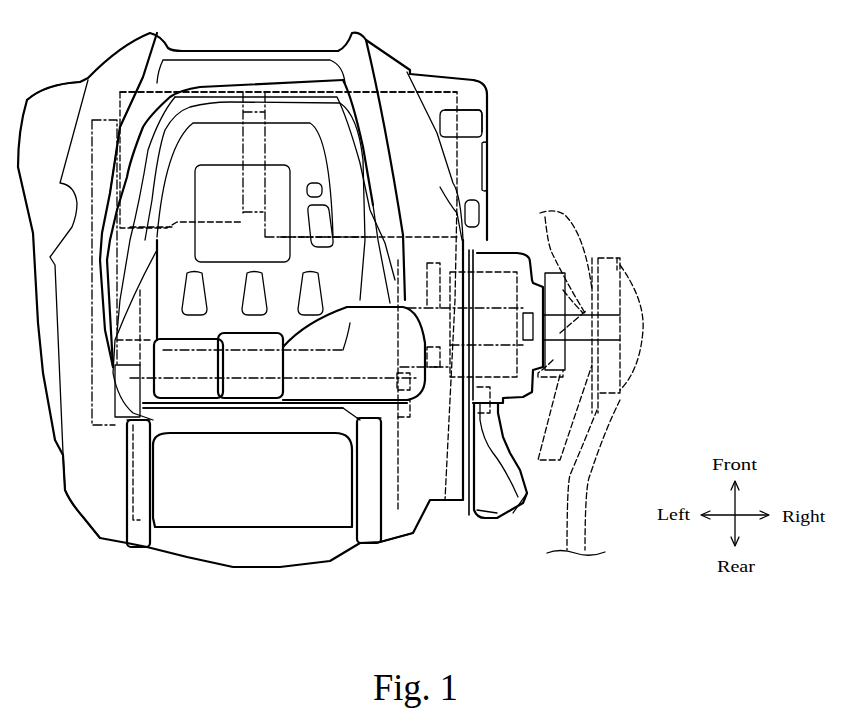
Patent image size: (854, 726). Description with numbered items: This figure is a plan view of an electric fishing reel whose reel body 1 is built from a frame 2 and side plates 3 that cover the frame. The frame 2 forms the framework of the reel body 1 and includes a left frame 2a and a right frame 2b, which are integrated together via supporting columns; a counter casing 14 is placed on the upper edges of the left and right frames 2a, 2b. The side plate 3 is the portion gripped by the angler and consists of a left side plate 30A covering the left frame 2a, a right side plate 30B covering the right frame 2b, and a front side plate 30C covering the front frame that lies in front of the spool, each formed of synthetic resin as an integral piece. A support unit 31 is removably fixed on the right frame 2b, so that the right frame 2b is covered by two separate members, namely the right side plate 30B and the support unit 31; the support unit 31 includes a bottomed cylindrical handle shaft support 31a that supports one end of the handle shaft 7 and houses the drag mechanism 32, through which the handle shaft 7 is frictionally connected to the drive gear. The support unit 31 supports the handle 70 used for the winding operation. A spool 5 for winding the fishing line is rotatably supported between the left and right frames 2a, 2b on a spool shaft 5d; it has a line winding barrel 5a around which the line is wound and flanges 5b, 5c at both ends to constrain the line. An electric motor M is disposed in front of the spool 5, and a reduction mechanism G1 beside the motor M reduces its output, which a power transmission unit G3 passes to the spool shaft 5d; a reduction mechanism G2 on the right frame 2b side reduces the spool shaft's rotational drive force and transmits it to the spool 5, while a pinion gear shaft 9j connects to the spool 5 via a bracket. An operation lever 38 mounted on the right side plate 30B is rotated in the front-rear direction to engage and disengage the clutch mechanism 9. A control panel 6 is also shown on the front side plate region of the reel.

The reel body 1 is at (655, 107).
The frame 2 is at (254, 499).
The left frame 2a is at (137, 543).
The right frame 2b is at (373, 543).
The side plate 3 is at (252, 300).
The left side plate 30A is at (72, 503).
The right side plate 30B is at (445, 500).
The front side plate 30C is at (187, 43).
The spool 5 is at (297, 423).
The line winding barrel 5a is at (223, 423).
The flange 5b is at (158, 480).
The flange 5c is at (352, 478).
The spool shaft 5d is at (240, 407).
The control panel 6 is at (335, 287).
The handle shaft 7 is at (635, 290).
The clutch mechanism 9 is at (452, 497).
The pinion gear shaft 9j is at (518, 500).
The counter casing 14 is at (288, 143).
The support unit 31 is at (492, 250).
The handle shaft support 31a is at (515, 405).
The drag mechanism 32 is at (503, 252).
The operation lever 38 is at (497, 500).
The handle 70 is at (593, 470).
The electric motor M is at (453, 72).
The reduction mechanism G1 is at (147, 93).
The reduction mechanism G2 is at (390, 517).
The power transmission unit G3 is at (63, 137).